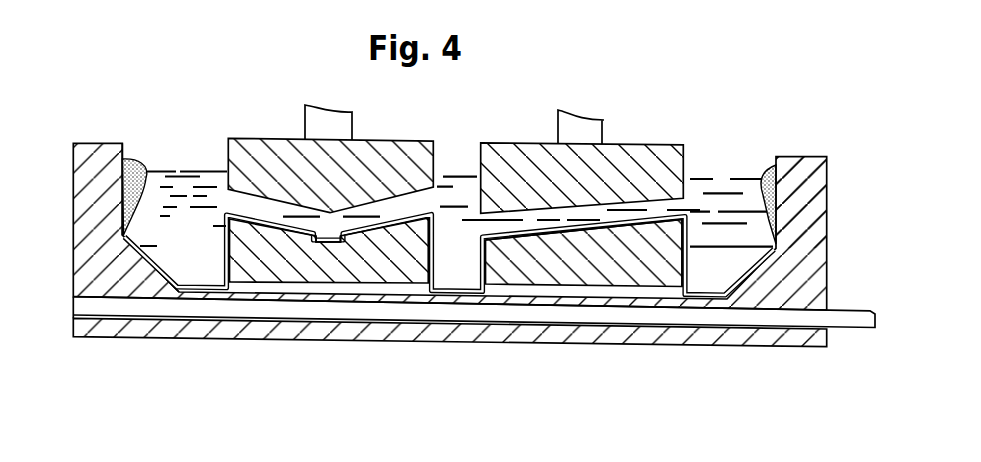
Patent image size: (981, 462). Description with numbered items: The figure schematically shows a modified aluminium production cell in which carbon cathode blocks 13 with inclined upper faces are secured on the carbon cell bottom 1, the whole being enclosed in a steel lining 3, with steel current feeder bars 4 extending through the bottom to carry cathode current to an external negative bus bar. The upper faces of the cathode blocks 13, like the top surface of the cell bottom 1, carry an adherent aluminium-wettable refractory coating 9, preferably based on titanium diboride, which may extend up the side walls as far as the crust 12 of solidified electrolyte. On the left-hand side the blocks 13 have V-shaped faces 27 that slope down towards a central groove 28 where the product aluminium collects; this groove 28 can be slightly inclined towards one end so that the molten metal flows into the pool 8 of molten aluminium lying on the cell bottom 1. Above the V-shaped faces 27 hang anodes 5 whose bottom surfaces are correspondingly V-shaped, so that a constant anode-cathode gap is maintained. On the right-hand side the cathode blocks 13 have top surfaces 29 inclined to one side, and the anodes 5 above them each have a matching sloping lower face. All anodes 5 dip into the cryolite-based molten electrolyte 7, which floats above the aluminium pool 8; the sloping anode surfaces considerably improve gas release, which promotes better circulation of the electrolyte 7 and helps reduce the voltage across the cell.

The cell bottom 1 is at (812, 263).
The steel lining 3 is at (827, 207).
The current feeder bars 4 is at (842, 320).
The anodes 5 is at (261, 152).
The molten electrolyte 7 is at (714, 185).
The pool of molten aluminium 8 is at (125, 237).
The aluminium-wettable refractory coating 9 is at (480, 265).
The crust of solidified electrolyte 12 is at (132, 168).
The cathode blocks 13 is at (287, 270).
The V-shaped faces 27 is at (420, 212).
The central groove 28 is at (341, 242).
The top surfaces inclined to one side 29 is at (635, 222).